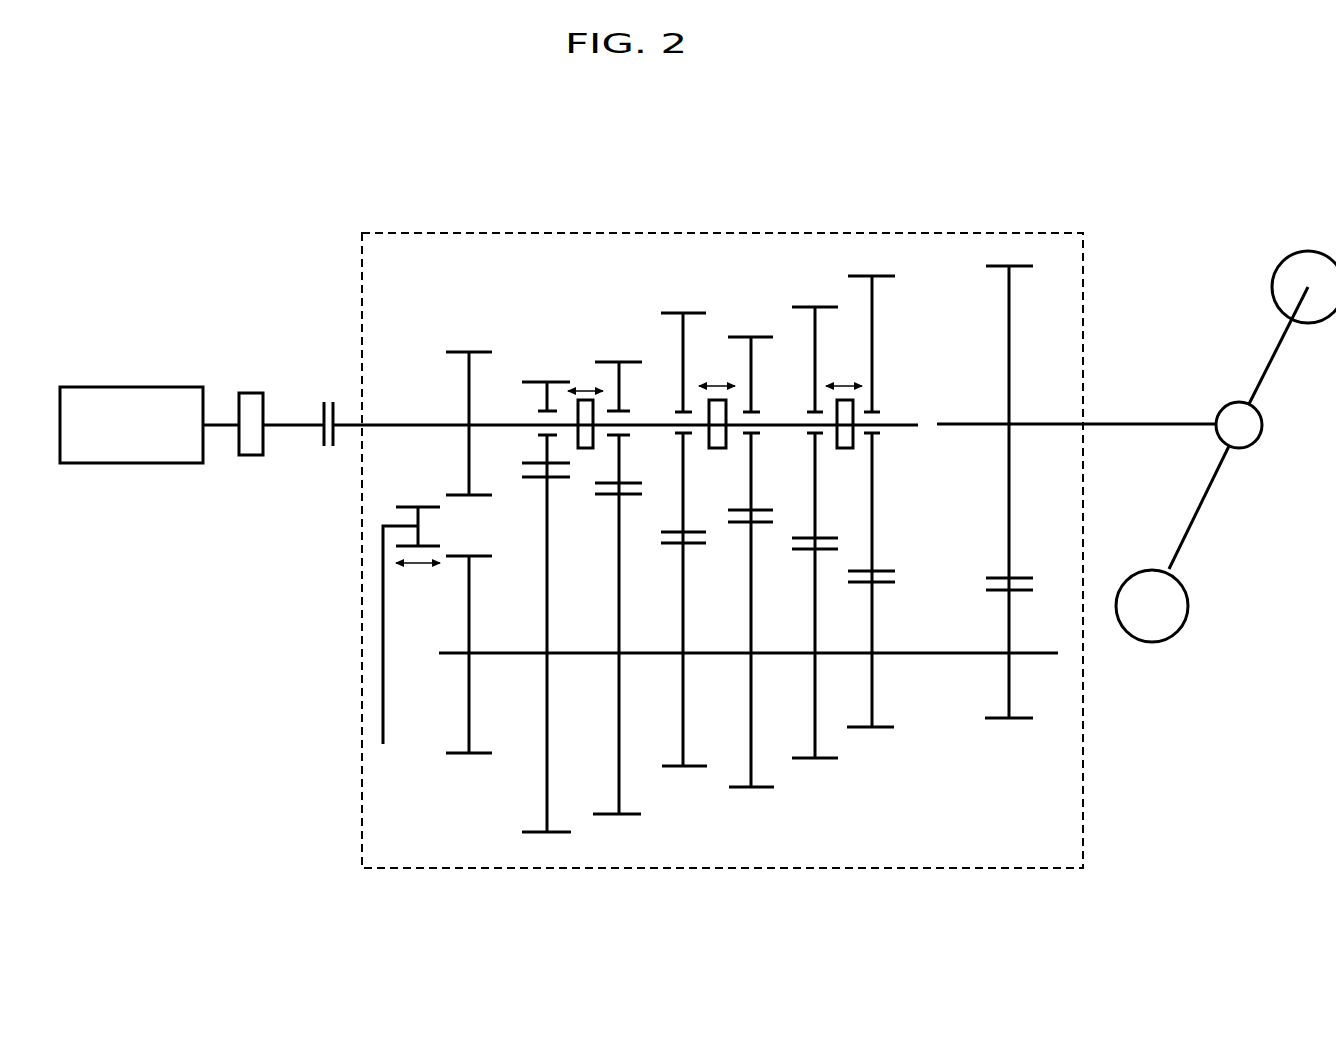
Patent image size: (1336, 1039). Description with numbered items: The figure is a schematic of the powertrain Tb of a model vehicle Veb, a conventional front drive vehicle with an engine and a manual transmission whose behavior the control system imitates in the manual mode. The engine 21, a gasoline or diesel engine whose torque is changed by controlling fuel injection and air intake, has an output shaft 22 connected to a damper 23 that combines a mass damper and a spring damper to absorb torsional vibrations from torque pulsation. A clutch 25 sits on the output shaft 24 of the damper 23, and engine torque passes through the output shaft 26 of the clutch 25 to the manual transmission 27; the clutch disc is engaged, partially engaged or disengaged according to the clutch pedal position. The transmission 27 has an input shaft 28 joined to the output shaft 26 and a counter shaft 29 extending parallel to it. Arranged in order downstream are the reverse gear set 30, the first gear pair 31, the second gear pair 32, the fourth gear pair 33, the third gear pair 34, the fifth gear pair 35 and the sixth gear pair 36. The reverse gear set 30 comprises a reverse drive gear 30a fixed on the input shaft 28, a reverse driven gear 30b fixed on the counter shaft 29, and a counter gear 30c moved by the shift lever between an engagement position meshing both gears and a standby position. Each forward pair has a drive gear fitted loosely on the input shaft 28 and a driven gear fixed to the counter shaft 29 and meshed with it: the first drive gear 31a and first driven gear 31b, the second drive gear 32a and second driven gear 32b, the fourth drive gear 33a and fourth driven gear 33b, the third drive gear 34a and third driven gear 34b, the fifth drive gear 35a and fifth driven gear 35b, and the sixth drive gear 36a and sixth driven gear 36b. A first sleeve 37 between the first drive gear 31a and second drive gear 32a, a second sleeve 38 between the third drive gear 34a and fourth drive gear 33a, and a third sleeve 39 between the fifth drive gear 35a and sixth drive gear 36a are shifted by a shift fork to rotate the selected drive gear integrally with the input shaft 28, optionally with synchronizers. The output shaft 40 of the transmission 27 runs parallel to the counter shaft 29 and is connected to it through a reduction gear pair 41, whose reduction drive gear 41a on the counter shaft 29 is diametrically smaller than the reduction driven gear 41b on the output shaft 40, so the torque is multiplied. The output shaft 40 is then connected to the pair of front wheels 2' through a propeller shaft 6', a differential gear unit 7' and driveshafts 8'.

The engine 21 is at (134, 387).
The output shaft of the engine 22 is at (224, 423).
The damper 23 is at (252, 456).
The output shaft of the damper 24 is at (289, 427).
The clutch 25 is at (323, 398).
The output shaft of the clutch 26 is at (345, 430).
The manual transmission 27 is at (734, 231).
The input shaft 28 is at (412, 422).
The counter shaft 29 is at (446, 655).
The reverse gear set 30 is at (440, 614).
The reverse drive gear 30a is at (465, 351).
The reverse driven gear 30b is at (460, 755).
The counter gear 30c is at (414, 505).
The first gear pair 31 is at (535, 629).
The first drive gear 31a is at (535, 381).
The first driven gear 31b is at (527, 831).
The second gear pair 32 is at (606, 615).
The second drive gear 32a is at (619, 361).
The second driven gear 32b is at (600, 813).
The fourth gear pair 33 is at (669, 593).
The fourth drive gear 33a is at (672, 312).
The fourth driven gear 33b is at (668, 765).
The third gear pair 34 is at (736, 604).
The third drive gear 34a is at (737, 336).
The third driven gear 34b is at (730, 785).
The fifth gear pair 35 is at (800, 590).
The fifth drive gear 35a is at (803, 306).
The fifth driven gear 35b is at (802, 757).
The sixth gear pair 36 is at (891, 598).
The sixth drive gear 36a is at (887, 277).
The sixth driven gear 36b is at (885, 726).
The first sleeve 37 is at (580, 450).
The second sleeve 38 is at (716, 450).
The third sleeve 39 is at (843, 450).
The output shaft of the transmission 40 is at (962, 421).
The reduction gear pair 41 is at (991, 593).
The reduction drive gear 41a is at (993, 716).
The reduction driven gear 41b is at (993, 268).
The propeller shaft 6' is at (1148, 401).
The differential gear unit 7' is at (1273, 425).
The driveshafts 8' is at (1252, 390).
The front wheels 2' is at (1226, 420).
The model vehicle Veb is at (373, 162).
The powertrain Tb is at (300, 262).